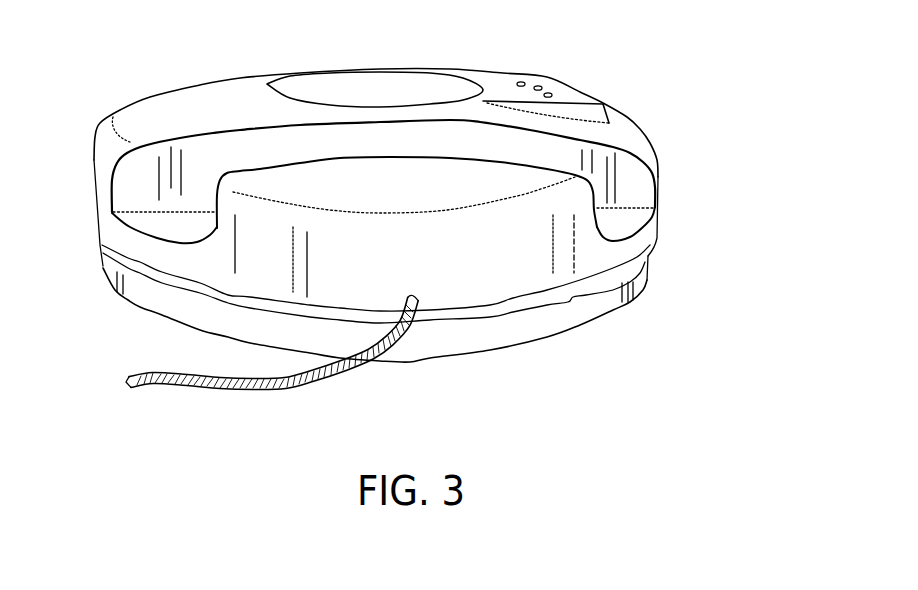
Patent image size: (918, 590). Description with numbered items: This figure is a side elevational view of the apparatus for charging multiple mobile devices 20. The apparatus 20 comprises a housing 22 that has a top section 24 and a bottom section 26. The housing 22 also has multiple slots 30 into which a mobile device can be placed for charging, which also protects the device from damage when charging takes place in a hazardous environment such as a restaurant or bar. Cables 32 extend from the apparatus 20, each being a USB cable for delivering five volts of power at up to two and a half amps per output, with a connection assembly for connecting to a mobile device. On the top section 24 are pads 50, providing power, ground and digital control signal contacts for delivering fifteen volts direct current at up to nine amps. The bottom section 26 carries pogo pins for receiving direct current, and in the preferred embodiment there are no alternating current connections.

The apparatus for charging multiple mobile devices 20 is at (107, 71).
The housing 22 is at (93, 143).
The top section 24 is at (417, 58).
The bottom section 26 is at (417, 368).
The slots 30 is at (134, 196).
The cables 32 is at (203, 393).
The pads 50 is at (545, 77).